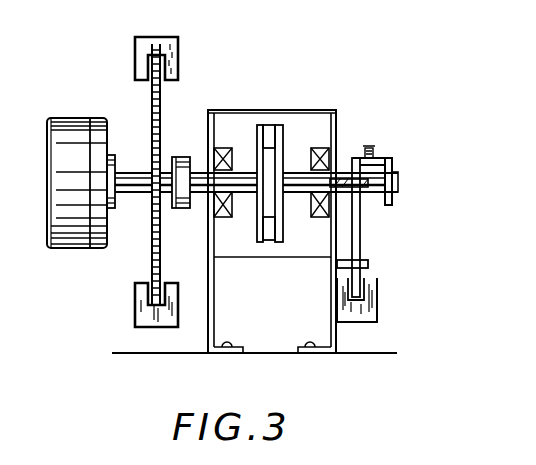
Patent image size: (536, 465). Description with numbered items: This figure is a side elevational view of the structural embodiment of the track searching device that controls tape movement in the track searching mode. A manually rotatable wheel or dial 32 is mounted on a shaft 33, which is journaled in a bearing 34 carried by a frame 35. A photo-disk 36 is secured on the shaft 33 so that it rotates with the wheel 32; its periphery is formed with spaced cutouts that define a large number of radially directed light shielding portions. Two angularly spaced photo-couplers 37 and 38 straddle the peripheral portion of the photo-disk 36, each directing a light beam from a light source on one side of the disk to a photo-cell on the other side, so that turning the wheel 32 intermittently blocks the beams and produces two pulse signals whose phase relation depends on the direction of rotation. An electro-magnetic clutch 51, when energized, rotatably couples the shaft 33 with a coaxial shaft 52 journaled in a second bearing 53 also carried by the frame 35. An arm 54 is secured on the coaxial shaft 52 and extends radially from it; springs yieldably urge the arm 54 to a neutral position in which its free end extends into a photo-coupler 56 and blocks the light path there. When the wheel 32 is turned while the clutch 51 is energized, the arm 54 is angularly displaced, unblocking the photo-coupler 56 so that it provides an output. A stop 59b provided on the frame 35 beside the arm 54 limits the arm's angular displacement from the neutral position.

The wheel or dial 32 is at (52, 224).
The shaft 33 is at (131, 172).
The bearing 34 is at (223, 147).
The frame 35 is at (210, 312).
The photo-disk 36 is at (148, 263).
The photo-coupler 37 is at (136, 46).
The photo-coupler 38 is at (133, 322).
The electro-magnetic clutch 51 is at (270, 120).
The coaxial shaft 52 is at (295, 178).
The bearing 53 is at (320, 218).
The arm 54 is at (360, 211).
The photo-coupler 56 is at (378, 305).
The stop 59b is at (370, 265).